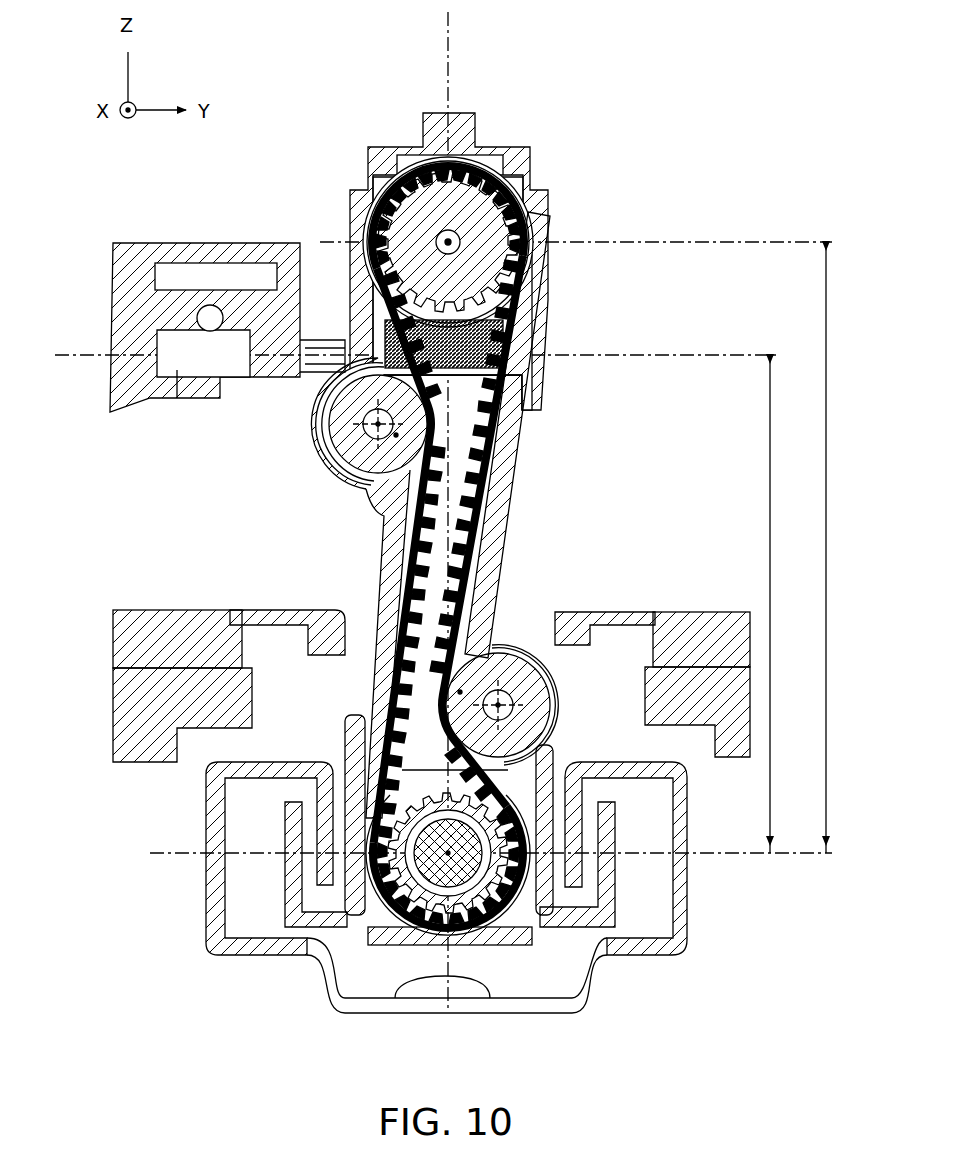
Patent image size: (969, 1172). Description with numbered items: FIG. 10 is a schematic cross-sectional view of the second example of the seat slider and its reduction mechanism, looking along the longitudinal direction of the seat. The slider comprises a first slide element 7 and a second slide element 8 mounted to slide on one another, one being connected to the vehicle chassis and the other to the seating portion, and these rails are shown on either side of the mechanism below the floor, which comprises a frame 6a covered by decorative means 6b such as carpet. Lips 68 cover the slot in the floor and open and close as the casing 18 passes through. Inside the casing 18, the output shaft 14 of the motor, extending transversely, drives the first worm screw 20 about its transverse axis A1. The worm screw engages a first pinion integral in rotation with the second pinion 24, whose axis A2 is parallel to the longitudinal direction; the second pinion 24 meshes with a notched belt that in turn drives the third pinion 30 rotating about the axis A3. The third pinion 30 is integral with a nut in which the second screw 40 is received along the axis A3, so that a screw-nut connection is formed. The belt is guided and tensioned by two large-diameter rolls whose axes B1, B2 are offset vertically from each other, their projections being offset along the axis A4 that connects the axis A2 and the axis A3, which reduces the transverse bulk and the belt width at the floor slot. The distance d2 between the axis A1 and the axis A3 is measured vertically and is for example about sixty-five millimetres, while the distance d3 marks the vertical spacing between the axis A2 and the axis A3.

The output shaft 14 is at (222, 244).
The casing 18 is at (378, 168).
The first worm screw 20 is at (518, 366).
The second pinion 24 is at (410, 226).
The third pinion 30 is at (522, 876).
The second screw 40 is at (470, 868).
The frame 6a is at (130, 738).
The decorative means 6b is at (146, 622).
The lips 68 is at (275, 612).
The first slide element 7 is at (275, 950).
The second slide element 8 is at (594, 945).
The axis of the first worm screw A1 is at (680, 354).
The axis of the first pinion A2 is at (530, 212).
The axis of the third pinion A3 is at (468, 938).
The axis connecting the second and third axes A4 is at (454, 64).
The axis of the first roll B1 is at (398, 436).
The axis of the second roll B2 is at (460, 692).
The distance between axes A1 and A3 d2 is at (786, 604).
The distance d3 is at (843, 548).